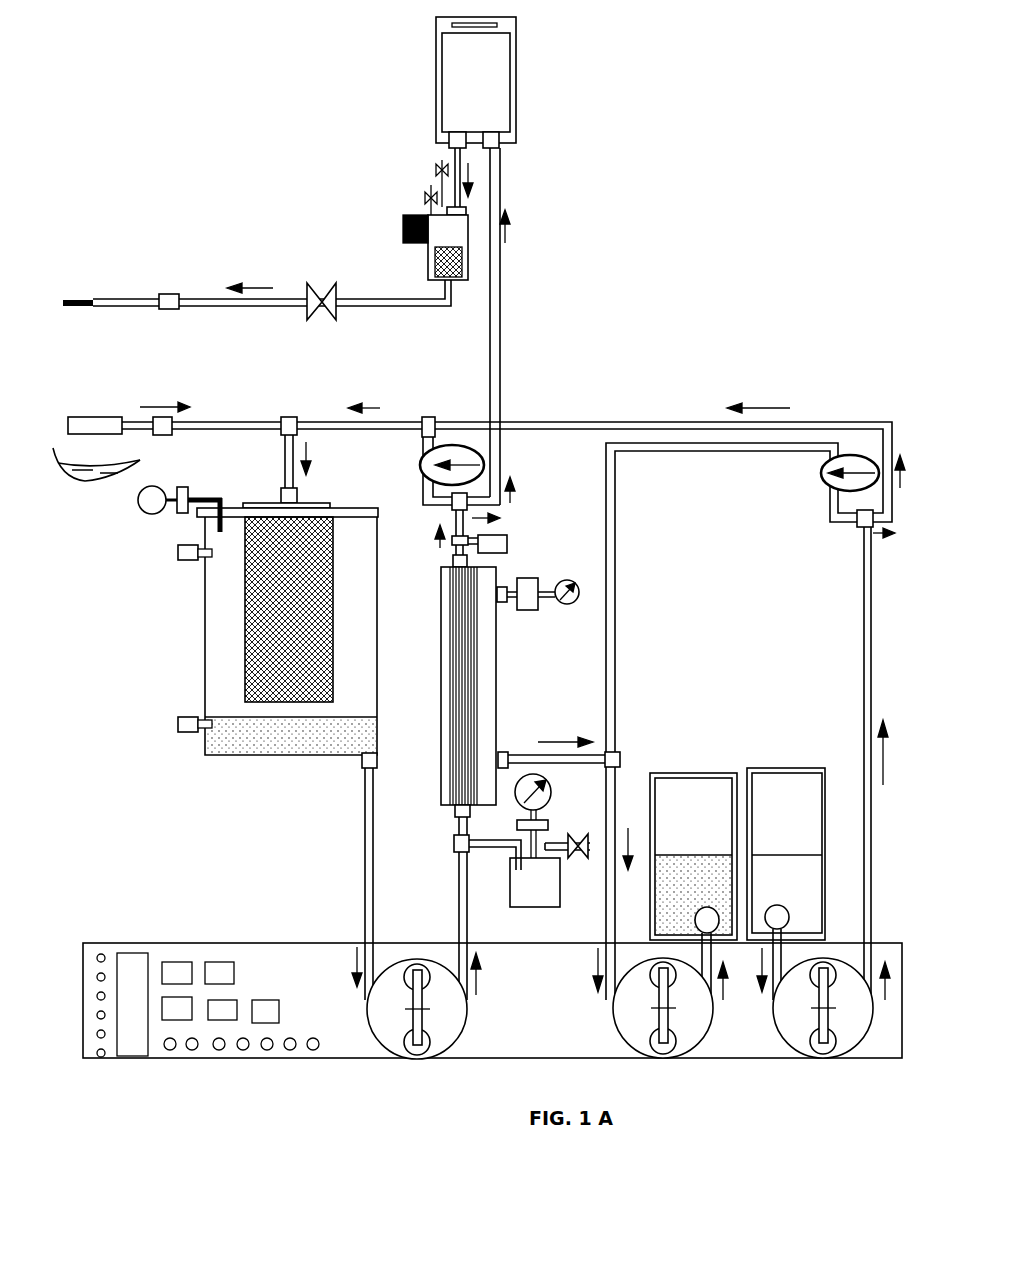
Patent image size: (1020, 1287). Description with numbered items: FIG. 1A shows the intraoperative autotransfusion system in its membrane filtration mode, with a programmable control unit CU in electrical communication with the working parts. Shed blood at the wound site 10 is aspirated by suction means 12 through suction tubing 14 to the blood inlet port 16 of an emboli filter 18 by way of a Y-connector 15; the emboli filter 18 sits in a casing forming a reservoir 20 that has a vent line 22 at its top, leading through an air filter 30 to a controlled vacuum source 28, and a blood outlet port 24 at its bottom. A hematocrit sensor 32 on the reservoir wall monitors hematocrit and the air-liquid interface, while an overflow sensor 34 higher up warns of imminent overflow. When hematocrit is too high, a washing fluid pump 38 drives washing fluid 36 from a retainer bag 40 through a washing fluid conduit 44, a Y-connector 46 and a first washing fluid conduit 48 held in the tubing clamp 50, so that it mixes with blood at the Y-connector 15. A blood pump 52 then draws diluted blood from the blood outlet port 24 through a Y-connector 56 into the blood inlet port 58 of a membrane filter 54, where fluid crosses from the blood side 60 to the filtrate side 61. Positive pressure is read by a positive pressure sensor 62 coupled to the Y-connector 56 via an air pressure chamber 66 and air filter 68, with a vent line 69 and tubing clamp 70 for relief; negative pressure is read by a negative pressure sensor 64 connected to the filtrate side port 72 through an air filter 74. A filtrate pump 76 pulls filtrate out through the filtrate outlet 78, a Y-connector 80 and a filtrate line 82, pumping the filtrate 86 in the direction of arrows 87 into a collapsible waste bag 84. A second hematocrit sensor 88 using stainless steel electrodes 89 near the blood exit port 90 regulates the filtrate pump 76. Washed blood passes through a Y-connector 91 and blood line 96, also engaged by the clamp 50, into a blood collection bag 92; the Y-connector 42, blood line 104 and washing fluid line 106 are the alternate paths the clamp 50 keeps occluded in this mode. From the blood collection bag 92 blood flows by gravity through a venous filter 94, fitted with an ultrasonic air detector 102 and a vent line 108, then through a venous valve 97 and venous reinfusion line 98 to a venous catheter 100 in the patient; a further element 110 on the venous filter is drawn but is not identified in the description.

The wound site 10 is at (60, 468).
The suction means 12 is at (105, 410).
The suction tubing 14 is at (250, 418).
The Y-connector 15 is at (288, 415).
The blood inlet port 16 is at (280, 492).
The emboli filter 18 is at (242, 607).
The reservoir 20 is at (203, 680).
The vent line 22 is at (212, 488).
The blood outlet port 24 is at (360, 765).
The controlled vacuum source 28 is at (140, 505).
The air filter 30 is at (180, 520).
The hematocrit sensor 32 is at (178, 725).
The overflow sensor 34 is at (178, 560).
The washing fluid 36 is at (805, 850).
The washing fluid pump 38 is at (780, 1037).
The retainer bag 40 is at (805, 765).
The Y-connector 42 is at (425, 412).
The washing fluid conduit 44 is at (860, 615).
The Y-connector 46 is at (855, 535).
The first washing fluid conduit 48 is at (890, 525).
The tubing clamp 50 is at (420, 468).
The blood pump 52 is at (472, 1016).
The membrane filter 54 is at (468, 686).
The Y-connector 56 is at (452, 848).
The blood inlet port 58 is at (450, 813).
The blood side 60 is at (448, 632).
The filtrate side 61 is at (497, 665).
The positive pressure sensor 62 is at (555, 792).
The negative pressure sensor 64 is at (565, 606).
The air pressure chamber 66 is at (505, 898).
The air filter 68 is at (552, 822).
The vent line 69 is at (560, 840).
The tubing clamp 70 is at (583, 858).
The filtrate side port 72 is at (505, 605).
The air filter 74 is at (527, 578).
The filtrate pump 76 is at (605, 1010).
The filtrate outlet 78 is at (505, 745).
The Y-connector 80 is at (622, 755).
The filtrate line 82 is at (605, 916).
The collapsible waste bag 84 is at (700, 770).
The filtrate 86 is at (714, 845).
The arrows 87 is at (598, 985).
The hematocrit sensor 88 is at (510, 540).
The stainless steel electrodes 89 is at (450, 541).
The blood exit port 90 is at (448, 565).
The Y-connector 91 is at (440, 517).
The blood collection bag 92 is at (432, 56).
The venous filter 94 is at (425, 265).
The blood line 96 is at (505, 470).
The venous valve 97 is at (310, 285).
The venous reinfusion line 98 is at (200, 295).
The venous catheter 100 is at (70, 290).
The ultrasonic air detector 102 is at (403, 231).
The blood line 104 is at (450, 500).
The washing fluid line 106 is at (825, 512).
The vent line 108 is at (425, 197).
The valve 110 is at (437, 168).
The control unit CU is at (128, 940).